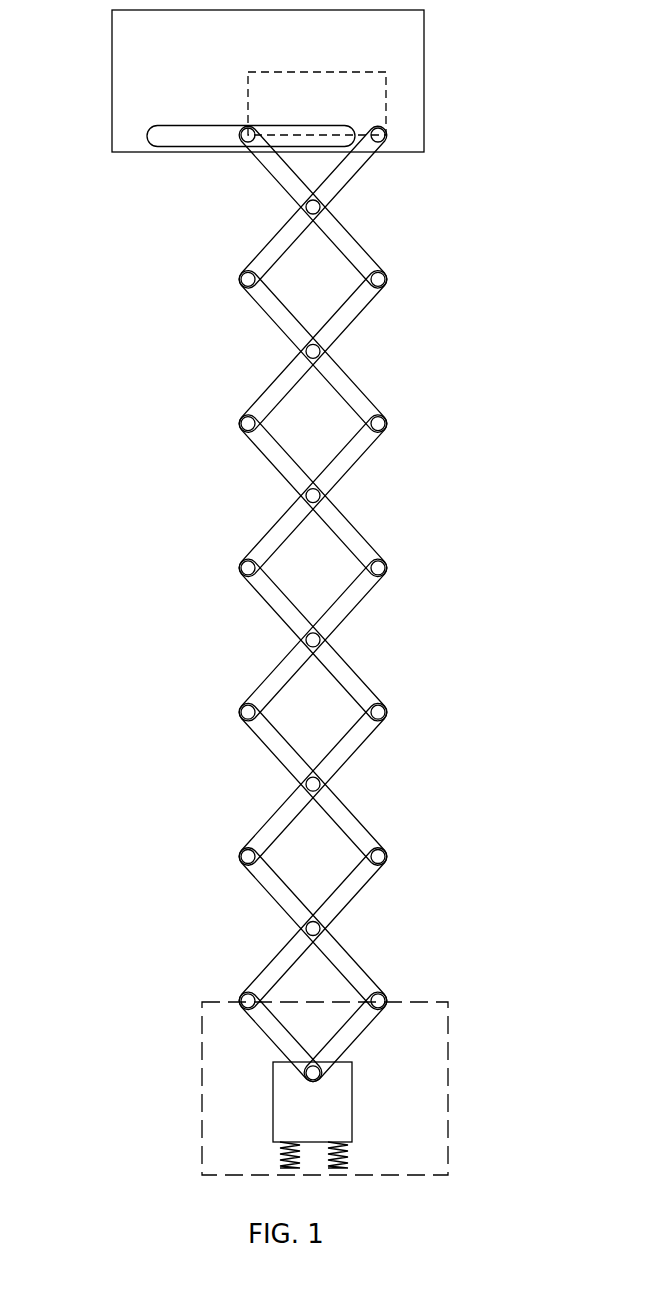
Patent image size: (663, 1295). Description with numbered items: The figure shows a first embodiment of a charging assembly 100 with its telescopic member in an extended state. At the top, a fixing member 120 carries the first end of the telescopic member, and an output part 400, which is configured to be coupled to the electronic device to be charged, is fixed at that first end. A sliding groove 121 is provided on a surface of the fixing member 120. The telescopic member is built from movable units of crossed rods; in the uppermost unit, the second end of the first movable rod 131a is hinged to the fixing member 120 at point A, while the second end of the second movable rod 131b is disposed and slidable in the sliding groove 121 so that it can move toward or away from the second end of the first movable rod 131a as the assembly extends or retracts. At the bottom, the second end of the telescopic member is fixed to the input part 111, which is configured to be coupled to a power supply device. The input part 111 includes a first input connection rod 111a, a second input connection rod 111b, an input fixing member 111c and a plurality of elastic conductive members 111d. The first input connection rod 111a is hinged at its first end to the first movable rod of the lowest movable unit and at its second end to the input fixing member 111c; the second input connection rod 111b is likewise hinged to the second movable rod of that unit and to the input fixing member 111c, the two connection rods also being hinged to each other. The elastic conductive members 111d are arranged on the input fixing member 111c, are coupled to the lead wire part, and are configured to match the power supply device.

The charging assembly 100 is at (152, 667).
The fixing member 120 is at (413, 78).
The sliding groove 121 is at (177, 128).
The output part 400 is at (310, 70).
The hinge point A is at (387, 140).
The first movable rod 131a is at (285, 530).
The second movable rod 131b is at (343, 525).
The input part 111 is at (448, 1060).
The first input connection rod 111a is at (273, 1035).
The second input connection rod 111b is at (348, 1042).
The input fixing member 111c is at (347, 1102).
The elastic conductive members 111d is at (347, 1157).